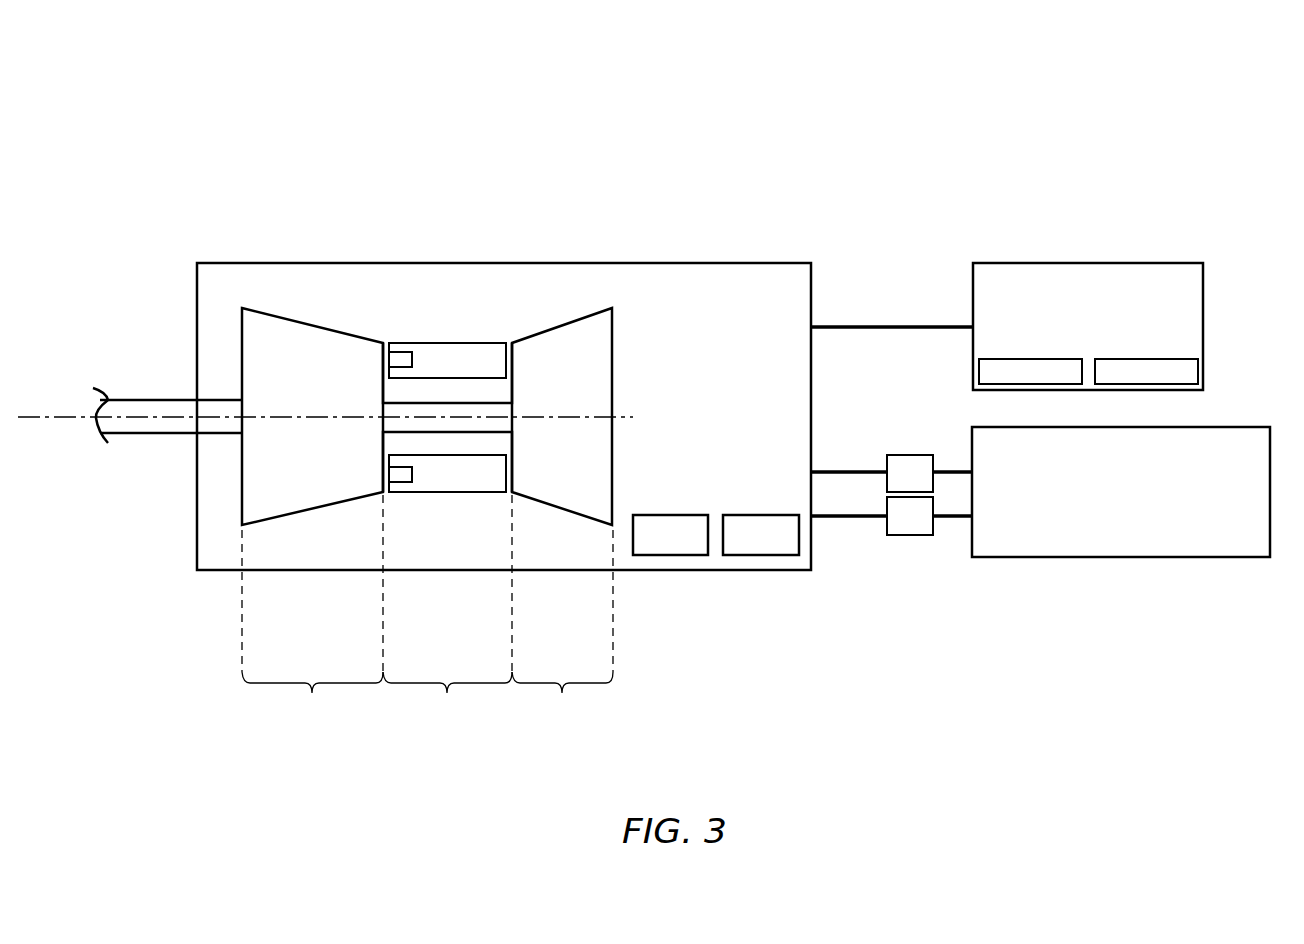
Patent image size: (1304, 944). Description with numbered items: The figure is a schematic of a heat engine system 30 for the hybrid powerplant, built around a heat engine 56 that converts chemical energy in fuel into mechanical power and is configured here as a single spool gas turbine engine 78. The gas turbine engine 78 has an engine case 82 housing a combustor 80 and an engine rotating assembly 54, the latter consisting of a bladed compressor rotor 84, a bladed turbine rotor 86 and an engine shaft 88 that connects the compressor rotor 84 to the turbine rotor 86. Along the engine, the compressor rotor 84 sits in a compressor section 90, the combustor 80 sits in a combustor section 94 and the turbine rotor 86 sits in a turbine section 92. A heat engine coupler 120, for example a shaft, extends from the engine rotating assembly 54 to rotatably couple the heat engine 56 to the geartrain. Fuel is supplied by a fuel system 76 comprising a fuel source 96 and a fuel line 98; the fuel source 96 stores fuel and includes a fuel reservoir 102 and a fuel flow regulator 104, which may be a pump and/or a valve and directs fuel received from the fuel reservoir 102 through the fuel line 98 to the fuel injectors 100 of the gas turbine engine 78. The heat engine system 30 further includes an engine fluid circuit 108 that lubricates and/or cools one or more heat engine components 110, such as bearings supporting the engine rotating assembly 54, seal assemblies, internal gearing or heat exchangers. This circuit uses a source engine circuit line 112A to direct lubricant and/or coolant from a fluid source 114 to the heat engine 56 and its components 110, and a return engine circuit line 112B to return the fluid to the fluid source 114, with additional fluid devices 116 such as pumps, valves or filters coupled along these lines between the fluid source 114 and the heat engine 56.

The heat engine system 30 is at (933, 114).
The engine rotating assembly 54 is at (624, 342).
The heat engine 56 is at (414, 456).
The gas turbine engine 78 is at (507, 261).
The fuel system 76 is at (1135, 230).
The combustor 80 is at (447, 343).
The engine case 82 is at (345, 262).
The bladed compressor rotor 84 is at (313, 488).
The bladed turbine rotor 86 is at (577, 488).
The engine shaft 88 is at (418, 423).
The compressor section 90 is at (312, 610).
The turbine section 92 is at (562, 627).
The combustor section 94 is at (447, 610).
The fuel source 96 is at (1205, 305).
The fuel line 98 is at (873, 326).
The fuel injectors 100 is at (400, 350).
The fuel reservoir 102 is at (1170, 370).
The fuel flow regulator 104 is at (1030, 372).
The engine fluid circuit 108 is at (886, 574).
The heat engine components 110 is at (690, 548).
The source engine circuit line 112A is at (835, 472).
The return engine circuit line 112B is at (848, 517).
The fluid source 114 is at (1115, 557).
The fluid devices 116 is at (928, 485).
The heat engine coupler 120 is at (155, 400).